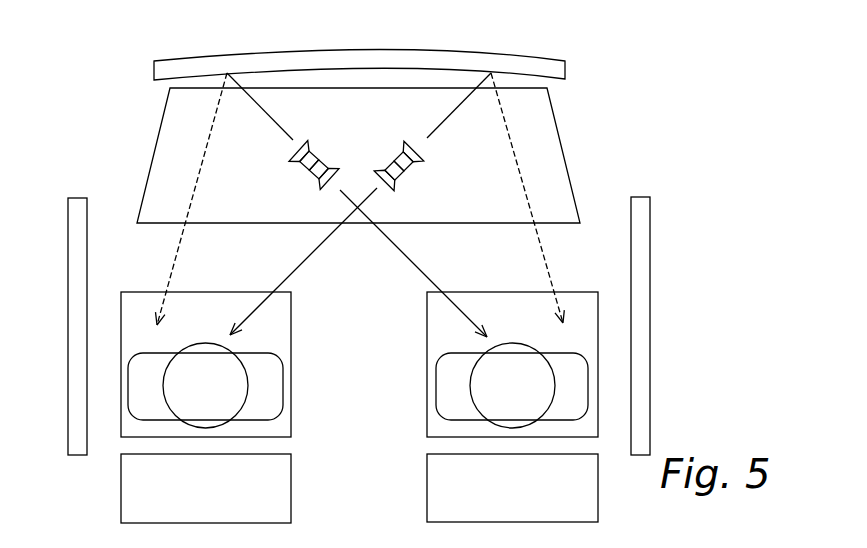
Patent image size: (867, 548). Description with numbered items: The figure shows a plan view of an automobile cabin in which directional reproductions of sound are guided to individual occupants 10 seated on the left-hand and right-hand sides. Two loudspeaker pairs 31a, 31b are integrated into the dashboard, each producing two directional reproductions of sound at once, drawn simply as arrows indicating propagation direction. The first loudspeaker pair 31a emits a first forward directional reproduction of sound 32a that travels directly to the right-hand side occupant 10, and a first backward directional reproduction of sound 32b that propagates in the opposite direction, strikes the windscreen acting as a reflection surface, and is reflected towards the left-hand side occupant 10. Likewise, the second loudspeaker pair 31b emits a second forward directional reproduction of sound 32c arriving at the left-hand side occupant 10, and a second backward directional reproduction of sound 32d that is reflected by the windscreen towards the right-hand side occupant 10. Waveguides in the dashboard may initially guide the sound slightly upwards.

The occupant 10 is at (436, 395).
The first loudspeaker pair 31a is at (327, 143).
The second loudspeaker pair 31b is at (388, 140).
The first forward directional reproduction of sound 32a is at (420, 267).
The first backward directional reproduction of sound 32b is at (175, 251).
The second forward directional reproduction of sound 32c is at (303, 263).
The second backward directional reproduction of sound 32d is at (548, 268).